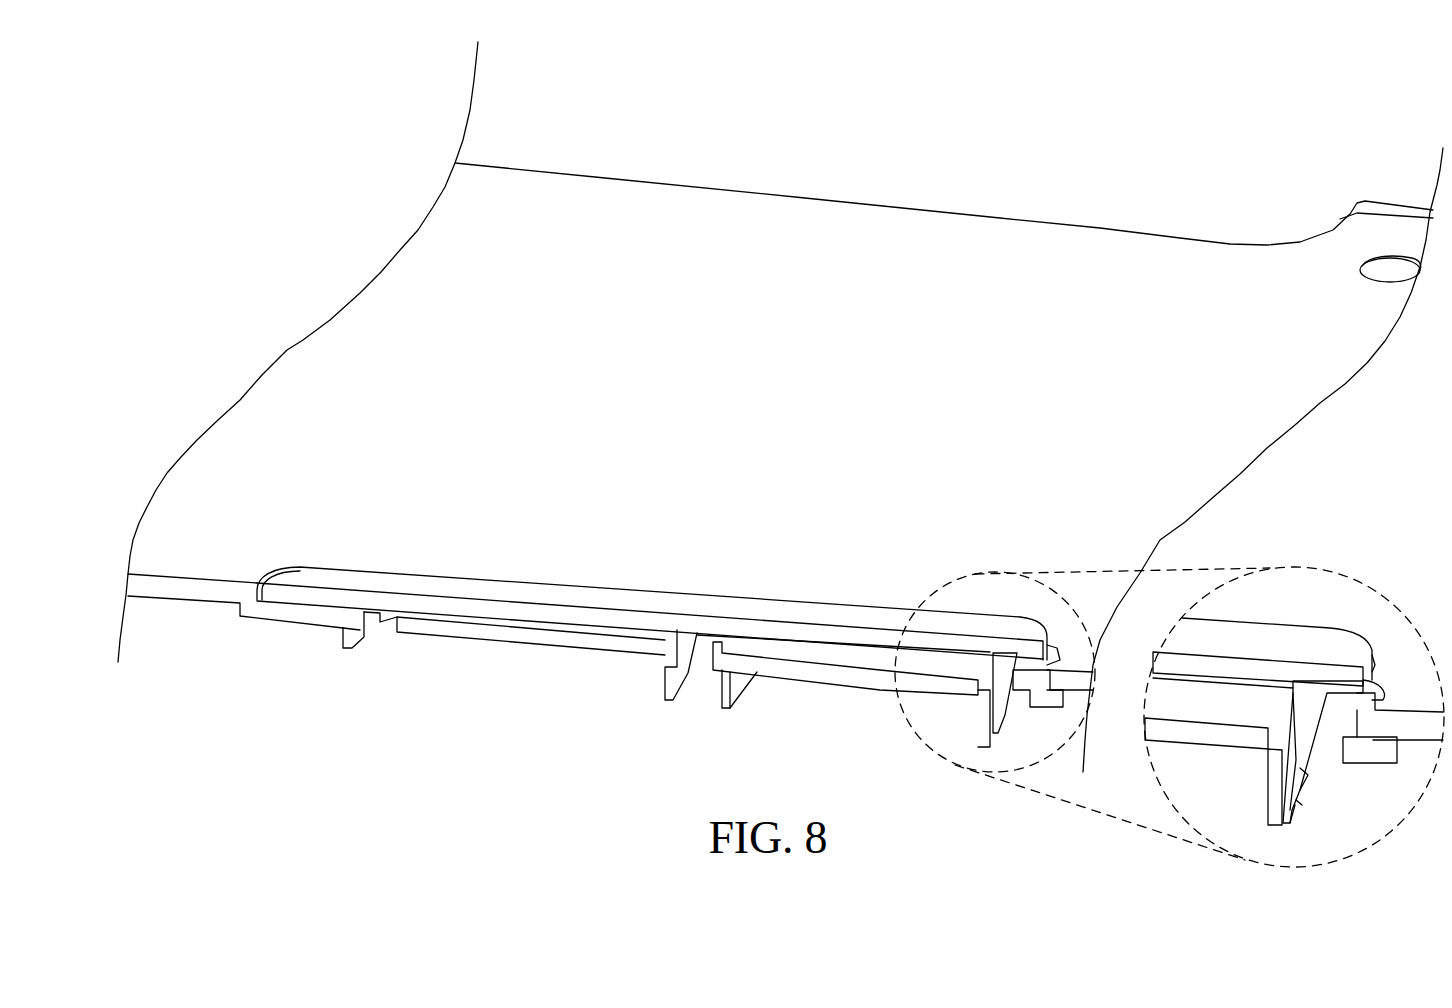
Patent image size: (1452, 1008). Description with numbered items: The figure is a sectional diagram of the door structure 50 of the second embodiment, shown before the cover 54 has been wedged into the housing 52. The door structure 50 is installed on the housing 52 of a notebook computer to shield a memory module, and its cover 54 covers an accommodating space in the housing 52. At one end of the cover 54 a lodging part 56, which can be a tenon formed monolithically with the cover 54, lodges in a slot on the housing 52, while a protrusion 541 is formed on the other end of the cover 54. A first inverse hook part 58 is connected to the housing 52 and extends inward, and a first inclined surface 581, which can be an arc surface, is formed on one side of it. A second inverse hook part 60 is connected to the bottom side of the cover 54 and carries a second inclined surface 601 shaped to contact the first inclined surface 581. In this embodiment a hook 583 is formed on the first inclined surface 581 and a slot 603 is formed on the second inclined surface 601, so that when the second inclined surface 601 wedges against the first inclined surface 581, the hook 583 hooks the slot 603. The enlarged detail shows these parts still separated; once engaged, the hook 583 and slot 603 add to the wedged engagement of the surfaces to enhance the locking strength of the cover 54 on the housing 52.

The door structure 50 is at (470, 683).
The housing 52 is at (190, 563).
The cover 54 is at (865, 617).
The protrusion 541 is at (1385, 697).
The lodging part 56 is at (267, 597).
The first inverse hook part 58 is at (663, 683).
The first inclined surface 581 is at (1287, 817).
The hook 583 is at (1300, 820).
The second inverse hook part 60 is at (688, 658).
The second inclined surface 601 is at (1290, 715).
The slot 603 is at (1313, 772).